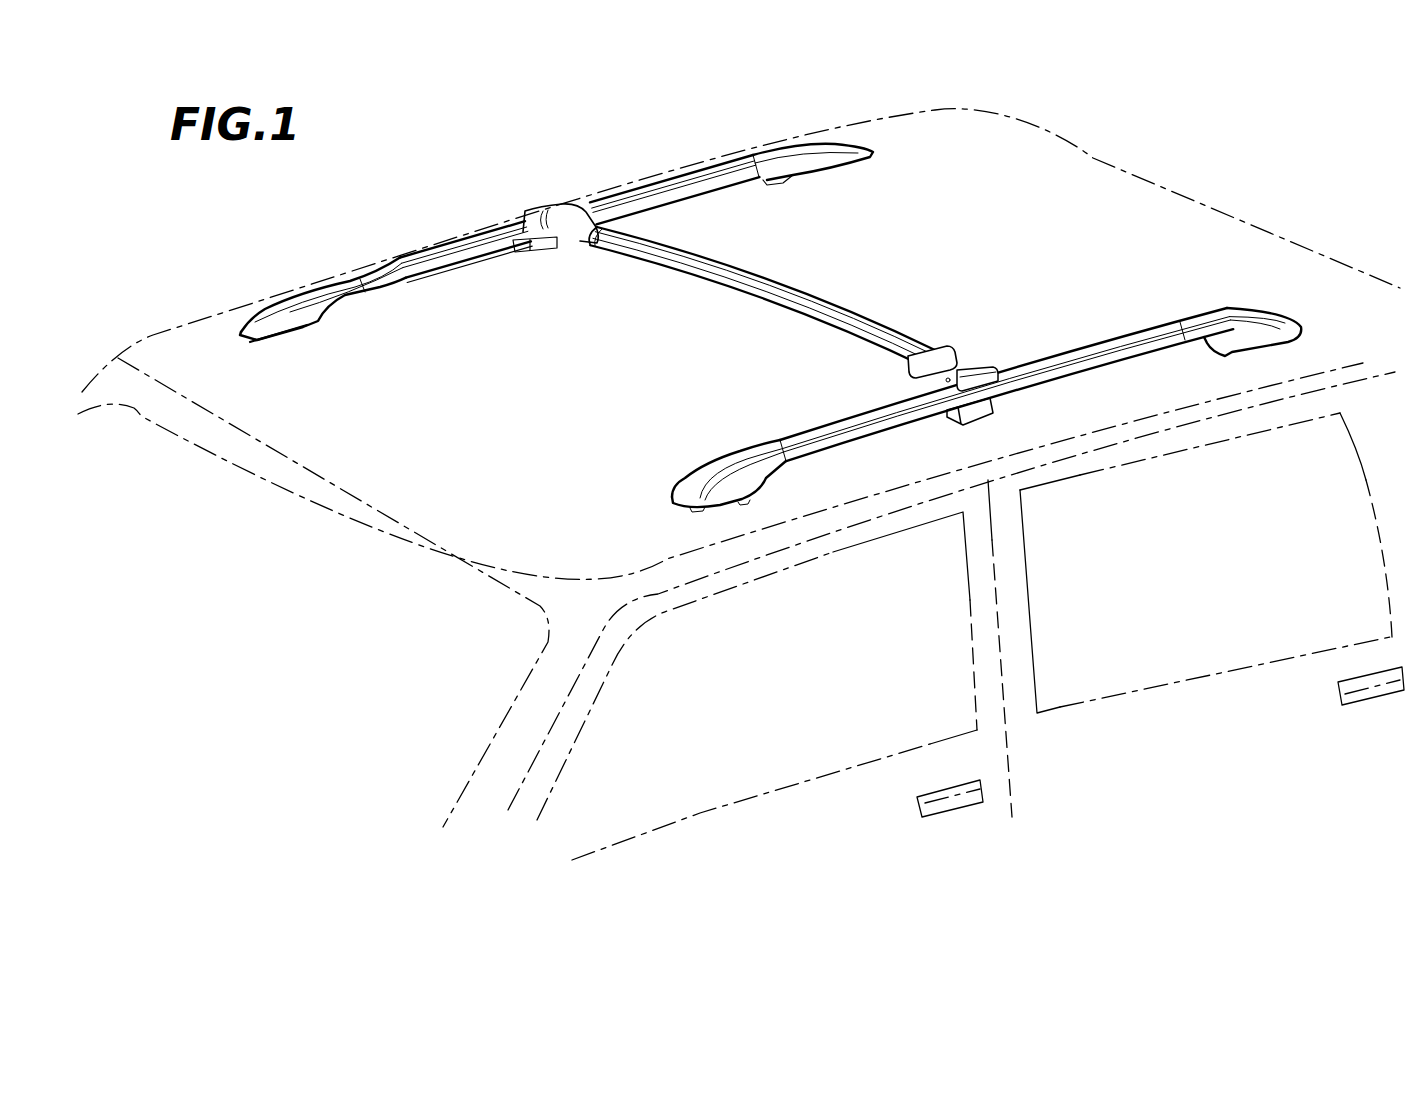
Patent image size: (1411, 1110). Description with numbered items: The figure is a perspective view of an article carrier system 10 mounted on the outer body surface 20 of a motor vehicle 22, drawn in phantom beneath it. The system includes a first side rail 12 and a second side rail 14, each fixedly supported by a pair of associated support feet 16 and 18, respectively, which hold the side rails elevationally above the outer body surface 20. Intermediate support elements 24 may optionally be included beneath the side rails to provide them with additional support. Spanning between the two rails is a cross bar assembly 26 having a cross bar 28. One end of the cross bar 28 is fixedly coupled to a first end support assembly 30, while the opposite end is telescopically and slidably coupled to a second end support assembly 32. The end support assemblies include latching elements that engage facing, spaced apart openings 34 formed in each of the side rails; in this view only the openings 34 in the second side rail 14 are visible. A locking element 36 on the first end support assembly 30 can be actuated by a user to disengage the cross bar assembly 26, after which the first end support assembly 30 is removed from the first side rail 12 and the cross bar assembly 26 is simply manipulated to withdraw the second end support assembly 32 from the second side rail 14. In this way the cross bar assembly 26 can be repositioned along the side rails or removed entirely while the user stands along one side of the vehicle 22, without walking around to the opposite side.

The article carrier system 10 is at (706, 152).
The first side rail 12 is at (1108, 330).
The second side rail 14 is at (690, 197).
The support feet 16 is at (687, 483).
The support feet 18 is at (296, 334).
The outer body surface 20 is at (1095, 158).
The motor vehicle 22 is at (375, 220).
The intermediate support elements 24 is at (522, 220).
The cross bar assembly 26 is at (732, 298).
The cross bar 28 is at (757, 294).
The first end support assembly 30 is at (946, 338).
The second end support assembly 32 is at (580, 250).
The openings 34 is at (408, 275).
The locking element 36 is at (967, 363).